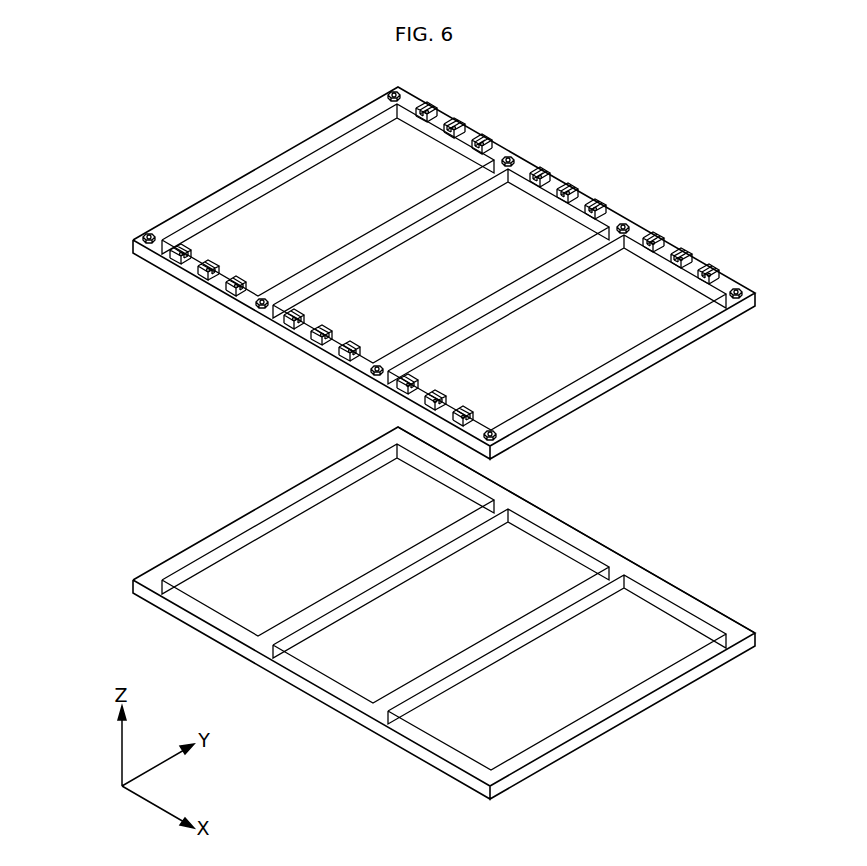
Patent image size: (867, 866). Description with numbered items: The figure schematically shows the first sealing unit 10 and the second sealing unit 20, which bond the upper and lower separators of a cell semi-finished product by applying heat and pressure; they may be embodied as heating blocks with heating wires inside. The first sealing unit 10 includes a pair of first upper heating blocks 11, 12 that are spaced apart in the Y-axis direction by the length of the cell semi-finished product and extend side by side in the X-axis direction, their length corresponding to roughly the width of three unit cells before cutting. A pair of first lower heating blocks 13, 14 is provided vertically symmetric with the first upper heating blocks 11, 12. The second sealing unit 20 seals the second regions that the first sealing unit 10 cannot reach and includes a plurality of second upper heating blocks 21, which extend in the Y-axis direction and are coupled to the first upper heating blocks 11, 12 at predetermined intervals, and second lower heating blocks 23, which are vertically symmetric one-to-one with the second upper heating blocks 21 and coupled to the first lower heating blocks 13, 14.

The first sealing unit 10 is at (75, 237).
The first upper heating block 11 is at (133, 251).
The first upper heating block 12 is at (583, 202).
The first lower heating block 13 is at (133, 591).
The first lower heating block 14 is at (592, 546).
The second sealing unit 20 is at (767, 422).
The second upper heating block 21 is at (517, 304).
The second lower heating block 23 is at (657, 682).